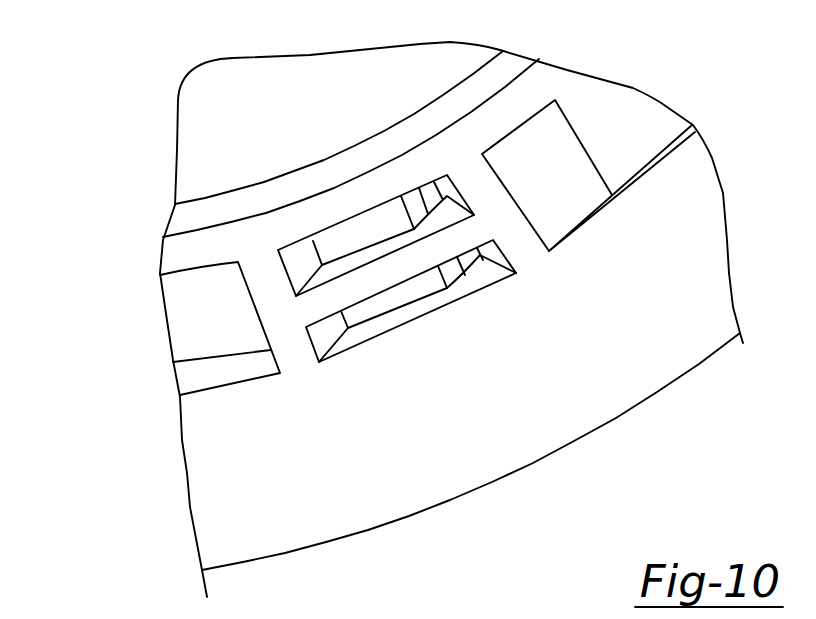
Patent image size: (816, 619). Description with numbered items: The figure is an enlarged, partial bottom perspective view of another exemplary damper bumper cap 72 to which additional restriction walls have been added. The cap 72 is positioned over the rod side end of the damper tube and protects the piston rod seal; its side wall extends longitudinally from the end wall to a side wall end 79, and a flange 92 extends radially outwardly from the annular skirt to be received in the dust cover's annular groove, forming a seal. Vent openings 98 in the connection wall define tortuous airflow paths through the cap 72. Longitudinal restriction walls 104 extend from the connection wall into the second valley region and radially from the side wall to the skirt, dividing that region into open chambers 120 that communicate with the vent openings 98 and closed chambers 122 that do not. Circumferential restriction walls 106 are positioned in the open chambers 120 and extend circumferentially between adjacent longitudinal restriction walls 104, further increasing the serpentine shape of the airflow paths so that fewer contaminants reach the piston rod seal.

The damper bumper cap 72 is at (132, 82).
The side wall end 79 is at (380, 147).
The flange 92 is at (627, 382).
The vent openings 98 is at (430, 197).
The longitudinal restriction walls 104 is at (551, 208).
The circumferential restriction walls 106 is at (367, 285).
The open chambers 120 is at (384, 230).
The closed chambers 122 is at (632, 128).